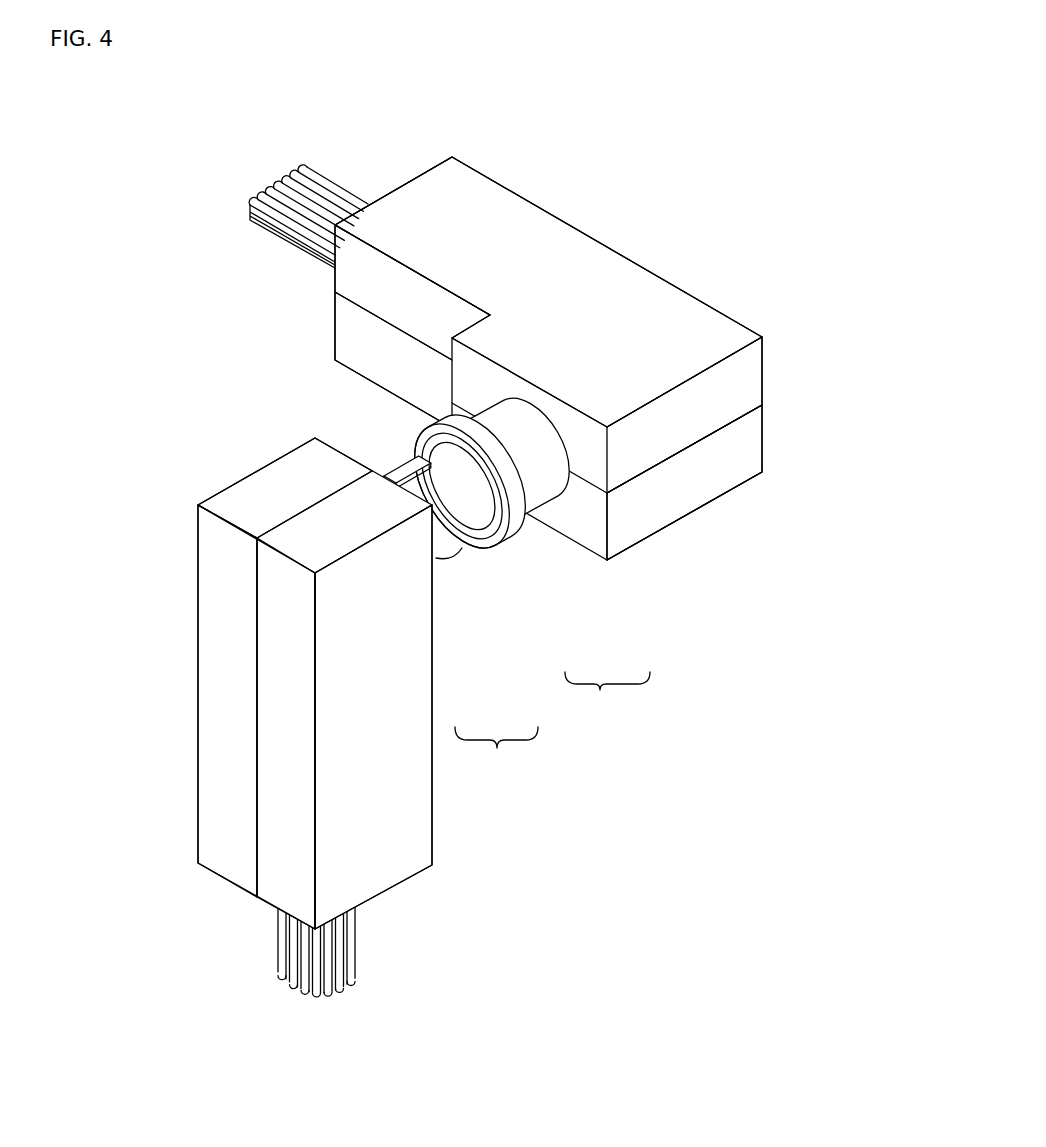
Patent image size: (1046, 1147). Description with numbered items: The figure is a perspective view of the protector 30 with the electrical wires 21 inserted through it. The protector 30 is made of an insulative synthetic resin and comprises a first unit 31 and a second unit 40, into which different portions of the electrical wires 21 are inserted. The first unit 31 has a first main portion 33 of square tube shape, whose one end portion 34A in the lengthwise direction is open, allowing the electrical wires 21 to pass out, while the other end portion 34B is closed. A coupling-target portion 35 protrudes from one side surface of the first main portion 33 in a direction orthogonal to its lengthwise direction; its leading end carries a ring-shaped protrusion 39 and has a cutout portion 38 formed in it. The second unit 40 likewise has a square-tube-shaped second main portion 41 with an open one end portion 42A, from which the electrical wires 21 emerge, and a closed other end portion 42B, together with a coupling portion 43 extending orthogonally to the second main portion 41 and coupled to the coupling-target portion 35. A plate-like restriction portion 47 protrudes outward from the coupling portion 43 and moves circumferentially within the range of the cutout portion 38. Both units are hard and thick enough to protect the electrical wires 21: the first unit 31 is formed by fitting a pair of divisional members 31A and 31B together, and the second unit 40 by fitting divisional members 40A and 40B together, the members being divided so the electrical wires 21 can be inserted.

The electrical wires 21 is at (252, 205).
The protector 30 is at (663, 112).
The first unit 31 is at (548, 438).
The divisional member 31A is at (638, 308).
The divisional member 31B is at (707, 507).
The first main portion 33 is at (642, 528).
The one end portion 34A is at (415, 180).
The other end portion 34B is at (738, 380).
The coupling-target portion 35 is at (537, 473).
The cutout portion 38 is at (420, 440).
The ring-shaped protrusion 39 is at (455, 422).
The second unit 40 is at (368, 683).
The divisional member 40A is at (387, 855).
The divisional member 40B is at (197, 683).
The second main portion 41 is at (418, 673).
The one end portion 42A is at (240, 890).
The other end portion 42B is at (285, 475).
The coupling portion 43 is at (436, 558).
The restriction portion 47 is at (480, 517).